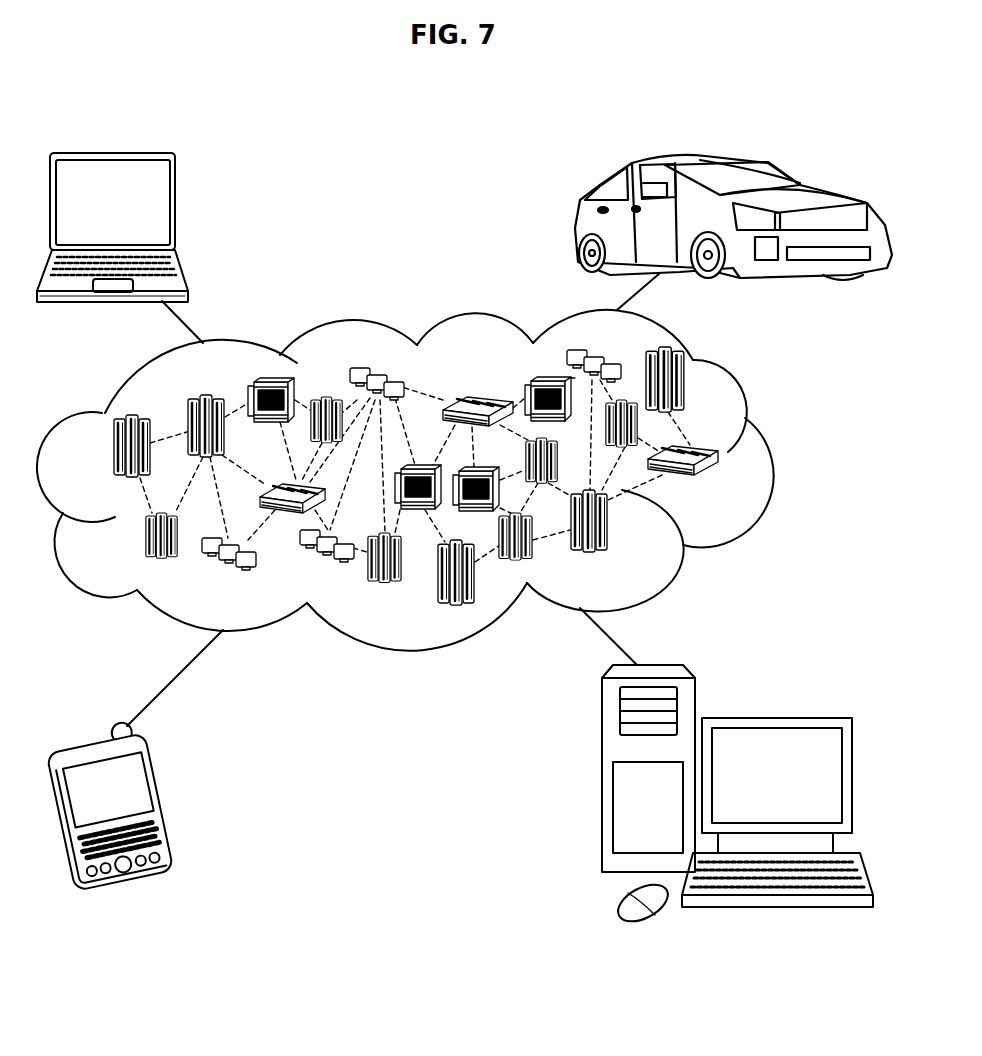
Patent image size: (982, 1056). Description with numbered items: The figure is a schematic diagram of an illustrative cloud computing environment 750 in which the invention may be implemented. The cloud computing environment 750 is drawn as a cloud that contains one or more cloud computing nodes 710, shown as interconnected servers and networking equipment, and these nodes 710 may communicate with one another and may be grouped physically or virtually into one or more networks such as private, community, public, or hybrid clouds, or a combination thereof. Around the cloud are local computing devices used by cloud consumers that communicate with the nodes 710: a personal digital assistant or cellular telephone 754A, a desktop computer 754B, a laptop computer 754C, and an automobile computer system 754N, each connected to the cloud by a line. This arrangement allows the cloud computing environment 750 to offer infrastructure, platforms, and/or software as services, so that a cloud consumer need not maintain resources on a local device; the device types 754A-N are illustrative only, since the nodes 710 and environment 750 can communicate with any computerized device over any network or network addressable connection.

The cloud computing environment 750 is at (775, 452).
The cloud computing nodes 710 is at (473, 476).
The personal digital assistant or cellular telephone 754A is at (167, 797).
The desktop computer 754B is at (773, 718).
The laptop computer 754C is at (176, 208).
The automobile computer system 754N is at (574, 224).